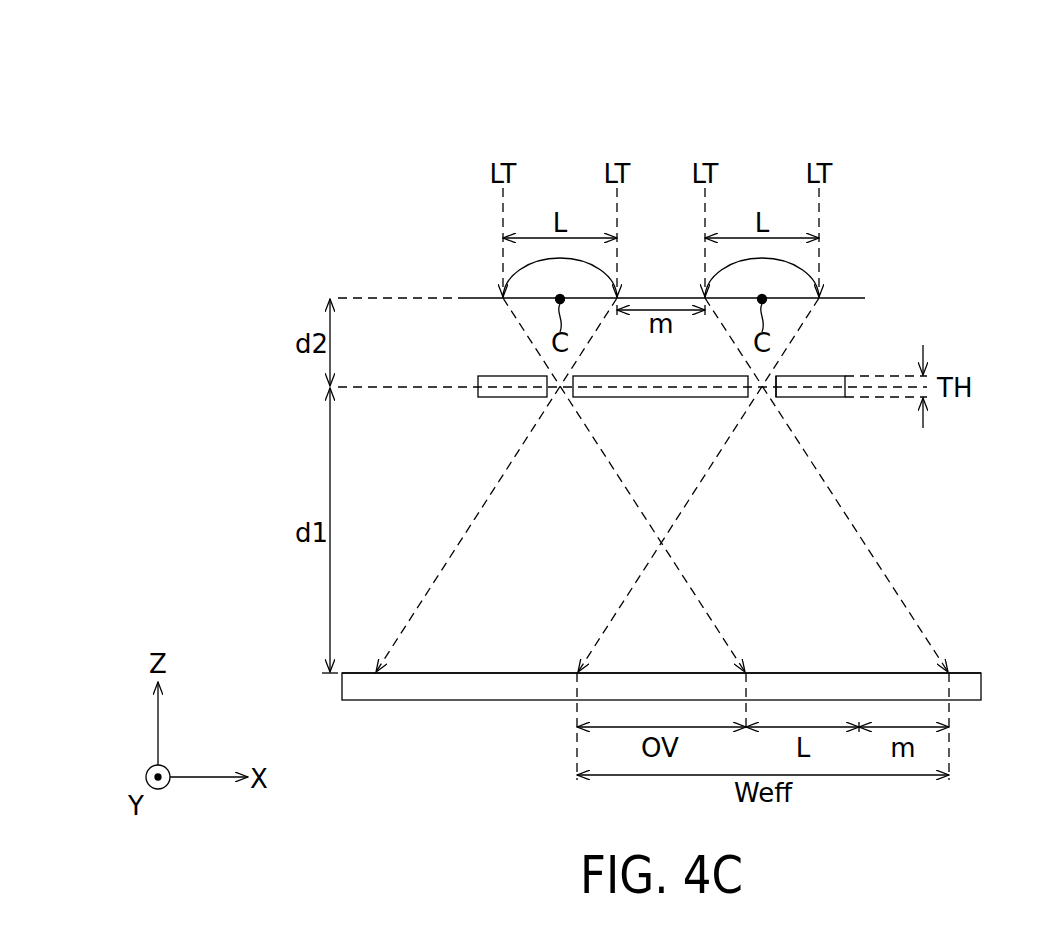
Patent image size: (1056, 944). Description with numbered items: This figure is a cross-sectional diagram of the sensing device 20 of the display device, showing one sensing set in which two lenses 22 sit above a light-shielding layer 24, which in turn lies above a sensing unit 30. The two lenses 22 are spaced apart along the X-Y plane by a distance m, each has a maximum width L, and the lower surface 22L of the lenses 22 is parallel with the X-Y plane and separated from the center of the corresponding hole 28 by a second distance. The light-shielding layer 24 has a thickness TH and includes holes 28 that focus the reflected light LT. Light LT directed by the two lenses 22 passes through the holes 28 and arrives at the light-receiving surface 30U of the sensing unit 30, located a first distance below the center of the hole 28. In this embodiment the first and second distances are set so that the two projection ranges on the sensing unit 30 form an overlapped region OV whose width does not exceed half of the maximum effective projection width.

The sensing device 20 is at (953, 90).
The lens 22 is at (546, 291).
The lower surface of the lens 22L is at (803, 300).
The light-shielding layer 24 is at (834, 398).
The hole 28 is at (777, 375).
The sensing unit 30 is at (971, 687).
The light-receiving surface of the sensing unit 30U is at (966, 672).